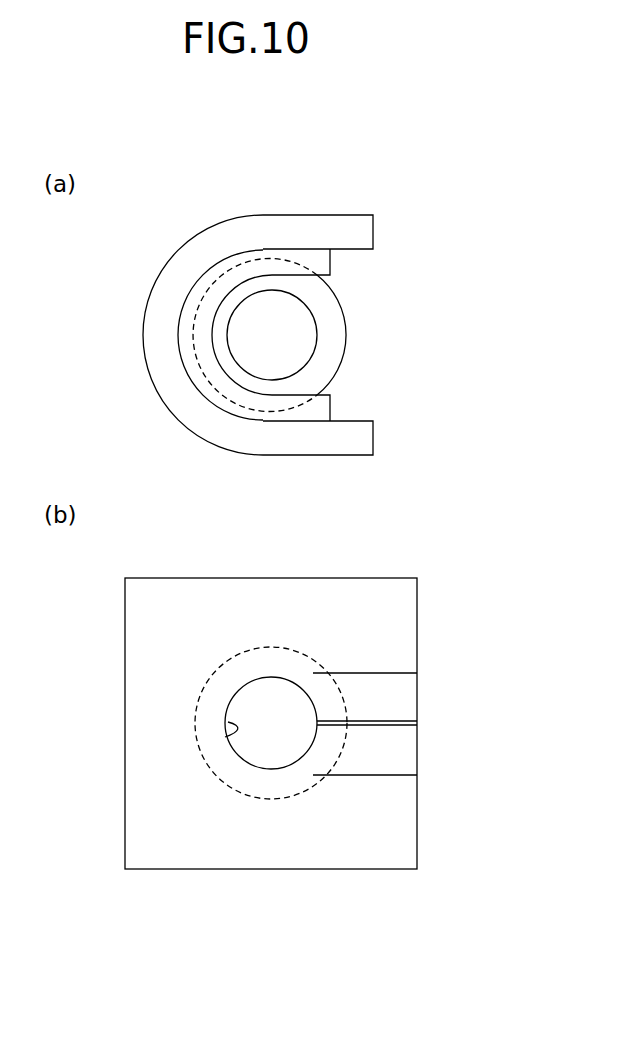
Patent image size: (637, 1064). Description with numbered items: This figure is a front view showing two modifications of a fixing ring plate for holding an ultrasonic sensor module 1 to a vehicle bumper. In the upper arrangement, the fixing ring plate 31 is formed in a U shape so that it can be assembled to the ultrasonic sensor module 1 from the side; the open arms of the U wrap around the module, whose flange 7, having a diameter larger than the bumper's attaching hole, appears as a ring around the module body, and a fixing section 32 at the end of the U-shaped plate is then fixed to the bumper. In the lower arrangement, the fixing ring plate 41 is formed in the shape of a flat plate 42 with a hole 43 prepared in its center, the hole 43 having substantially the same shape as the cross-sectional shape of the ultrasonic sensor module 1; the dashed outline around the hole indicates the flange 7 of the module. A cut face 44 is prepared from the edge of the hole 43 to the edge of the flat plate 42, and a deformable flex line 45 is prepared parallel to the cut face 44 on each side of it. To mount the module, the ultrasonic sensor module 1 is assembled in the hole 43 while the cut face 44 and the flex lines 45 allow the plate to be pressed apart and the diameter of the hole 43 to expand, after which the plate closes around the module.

The ultrasonic sensor module 1 is at (316, 325).
The flange 7 is at (333, 357).
The fixing ring plate 31 is at (207, 283).
The fixing section 32 is at (297, 232).
The fixing ring plate 41 is at (236, 723).
The flat plate 42 is at (158, 653).
The hole 43 is at (225, 737).
The cut face 44 is at (387, 724).
The flex line 45 is at (387, 673).